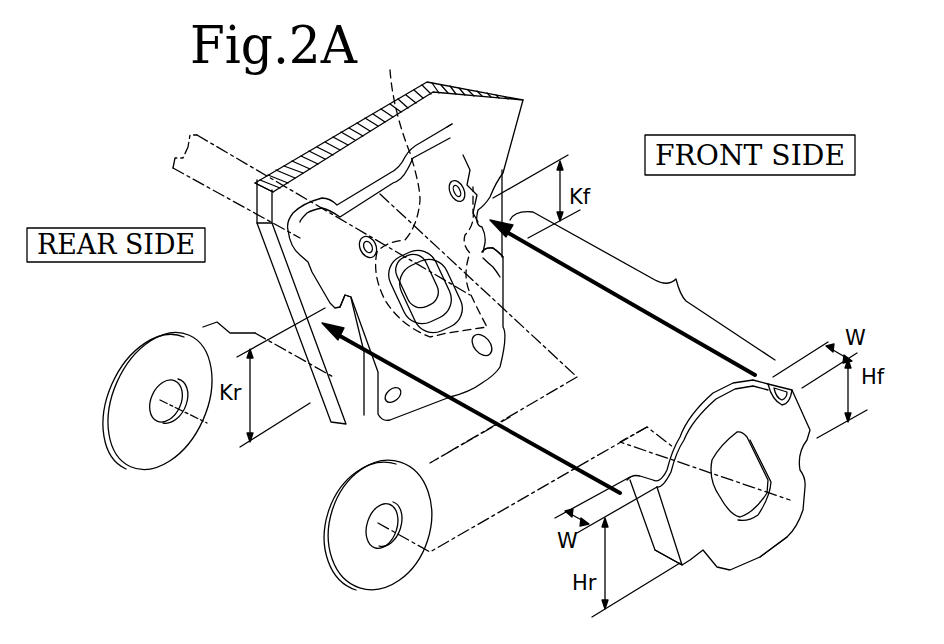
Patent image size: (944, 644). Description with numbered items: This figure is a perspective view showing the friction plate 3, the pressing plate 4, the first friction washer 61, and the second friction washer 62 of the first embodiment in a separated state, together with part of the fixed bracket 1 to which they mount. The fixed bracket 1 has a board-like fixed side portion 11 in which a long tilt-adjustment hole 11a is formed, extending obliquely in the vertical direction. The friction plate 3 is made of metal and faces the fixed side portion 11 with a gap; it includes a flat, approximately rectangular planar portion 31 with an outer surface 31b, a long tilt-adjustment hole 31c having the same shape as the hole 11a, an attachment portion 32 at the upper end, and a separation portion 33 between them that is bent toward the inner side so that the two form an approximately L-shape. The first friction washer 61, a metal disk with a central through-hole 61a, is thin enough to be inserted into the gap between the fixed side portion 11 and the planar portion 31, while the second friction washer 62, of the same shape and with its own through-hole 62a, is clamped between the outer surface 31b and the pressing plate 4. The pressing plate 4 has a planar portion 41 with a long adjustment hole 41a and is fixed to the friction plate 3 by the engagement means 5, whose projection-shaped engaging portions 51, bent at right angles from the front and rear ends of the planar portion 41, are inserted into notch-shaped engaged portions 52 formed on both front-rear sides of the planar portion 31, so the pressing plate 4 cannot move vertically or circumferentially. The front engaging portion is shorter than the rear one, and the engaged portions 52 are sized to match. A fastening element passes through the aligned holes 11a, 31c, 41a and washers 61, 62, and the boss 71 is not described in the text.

The fixed bracket 1 is at (510, 80).
The friction plate 3 is at (300, 272).
The pressing plate 4 is at (759, 562).
The engagement means 5 is at (548, 352).
The fixed side portion 11 is at (513, 117).
The long tilt-adjustment hole 11a is at (431, 198).
The planar portion 31 is at (497, 172).
The outer surface 31b is at (415, 396).
The long tilt-adjustment hole 31c is at (477, 373).
The attachment portion 32 is at (455, 148).
The separation portion 33 is at (463, 155).
The planar portion 41 is at (777, 523).
The long adjustment hole 41a is at (742, 452).
The engaging portion 51 is at (785, 387).
The engaged portion 52 is at (504, 306).
The first friction washer 61 is at (170, 443).
The through-hole 61a is at (173, 390).
The second friction washer 62 is at (382, 580).
The through-hole 62a is at (398, 513).
The cylindrical boss 71 is at (429, 287).